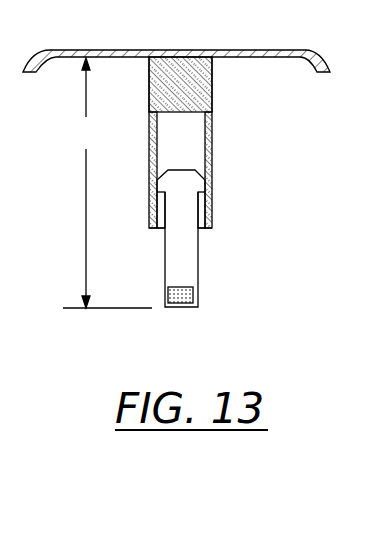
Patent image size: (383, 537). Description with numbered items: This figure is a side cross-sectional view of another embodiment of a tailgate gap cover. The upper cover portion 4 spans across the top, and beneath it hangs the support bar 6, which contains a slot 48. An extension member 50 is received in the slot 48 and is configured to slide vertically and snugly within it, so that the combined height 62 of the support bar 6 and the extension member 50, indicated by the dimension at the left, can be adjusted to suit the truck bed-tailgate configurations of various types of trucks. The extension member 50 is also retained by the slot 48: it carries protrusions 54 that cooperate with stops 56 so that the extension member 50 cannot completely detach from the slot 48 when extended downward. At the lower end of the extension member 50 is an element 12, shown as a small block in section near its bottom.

The plate 4 is at (232, 50).
The combined height 62 is at (70, 146).
The support bar 6 is at (210, 150).
The slot 48 is at (185, 127).
The protrusions 54 is at (157, 200).
The stops 56 is at (207, 208).
The extension member 50 is at (198, 247).
The sensor element 12 is at (198, 292).